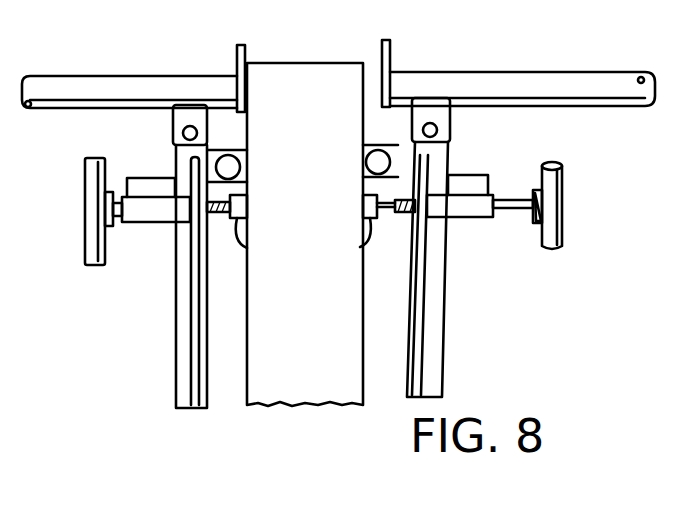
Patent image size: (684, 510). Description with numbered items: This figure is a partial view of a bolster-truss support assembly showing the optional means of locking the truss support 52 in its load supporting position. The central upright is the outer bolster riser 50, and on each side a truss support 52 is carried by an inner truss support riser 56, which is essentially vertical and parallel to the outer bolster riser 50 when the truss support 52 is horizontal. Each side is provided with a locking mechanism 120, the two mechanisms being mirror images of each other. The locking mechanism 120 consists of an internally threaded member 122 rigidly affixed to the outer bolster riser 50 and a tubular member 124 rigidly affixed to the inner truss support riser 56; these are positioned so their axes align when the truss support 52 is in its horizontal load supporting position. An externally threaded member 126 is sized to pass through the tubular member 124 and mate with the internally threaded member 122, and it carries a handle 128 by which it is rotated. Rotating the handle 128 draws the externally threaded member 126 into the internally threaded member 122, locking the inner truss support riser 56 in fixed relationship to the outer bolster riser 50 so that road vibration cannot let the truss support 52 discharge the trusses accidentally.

The outer bolster riser 50 is at (333, 62).
The truss support 52 is at (123, 88).
The inner truss support riser 56 is at (185, 360).
The locking mechanism 120 is at (155, 234).
The internally threaded member 122 is at (358, 250).
The tubular member 124 is at (152, 205).
The externally threaded member 126 is at (213, 217).
The handle 128 is at (88, 170).